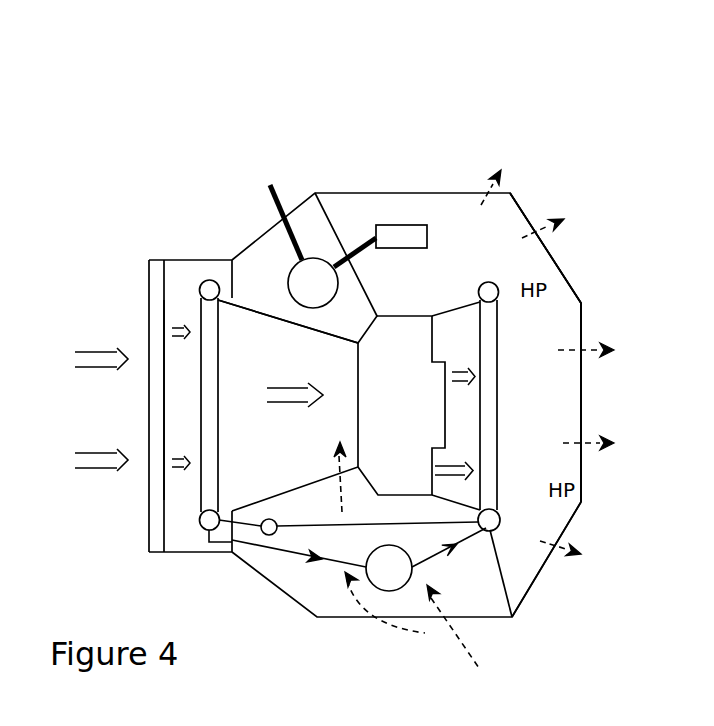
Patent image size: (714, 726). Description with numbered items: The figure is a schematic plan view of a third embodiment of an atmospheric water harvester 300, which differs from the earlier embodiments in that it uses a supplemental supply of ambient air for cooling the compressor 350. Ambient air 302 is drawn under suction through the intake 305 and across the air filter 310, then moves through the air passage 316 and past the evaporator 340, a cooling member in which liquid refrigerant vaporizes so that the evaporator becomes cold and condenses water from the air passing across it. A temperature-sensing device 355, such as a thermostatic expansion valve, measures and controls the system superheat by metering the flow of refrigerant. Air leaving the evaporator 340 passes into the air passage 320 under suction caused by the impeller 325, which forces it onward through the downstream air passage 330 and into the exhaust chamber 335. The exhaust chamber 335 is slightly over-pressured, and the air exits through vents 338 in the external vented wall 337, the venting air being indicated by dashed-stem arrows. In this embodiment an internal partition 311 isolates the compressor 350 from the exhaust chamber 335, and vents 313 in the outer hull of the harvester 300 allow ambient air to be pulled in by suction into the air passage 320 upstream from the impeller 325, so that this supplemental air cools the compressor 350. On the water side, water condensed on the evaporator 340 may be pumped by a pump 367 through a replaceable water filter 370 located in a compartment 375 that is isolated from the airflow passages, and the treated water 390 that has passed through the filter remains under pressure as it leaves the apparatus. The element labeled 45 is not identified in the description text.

The atmospheric water harvester 300 is at (417, 172).
The ambient air 302 is at (68, 372).
The intake 305 is at (123, 333).
The air filter 310 is at (155, 282).
The internal partition 311 is at (498, 567).
The vents 313 is at (383, 627).
The air passage 316 is at (180, 400).
The air passage 320 is at (317, 445).
The impeller 325 is at (430, 418).
The downstream air passage 330 is at (458, 358).
The exhaust chamber 335 is at (442, 285).
The external vented wall 337 is at (517, 202).
The vents 338 is at (570, 358).
The evaporator 340 is at (212, 443).
The compressor 350 is at (359, 559).
The temperature-sensing device 355 is at (274, 522).
The pump 367 is at (380, 246).
The water filter 370 is at (313, 283).
The compartment 375 is at (277, 284).
The treated water 390 is at (277, 205).
The right pivot rod 45 is at (488, 290).